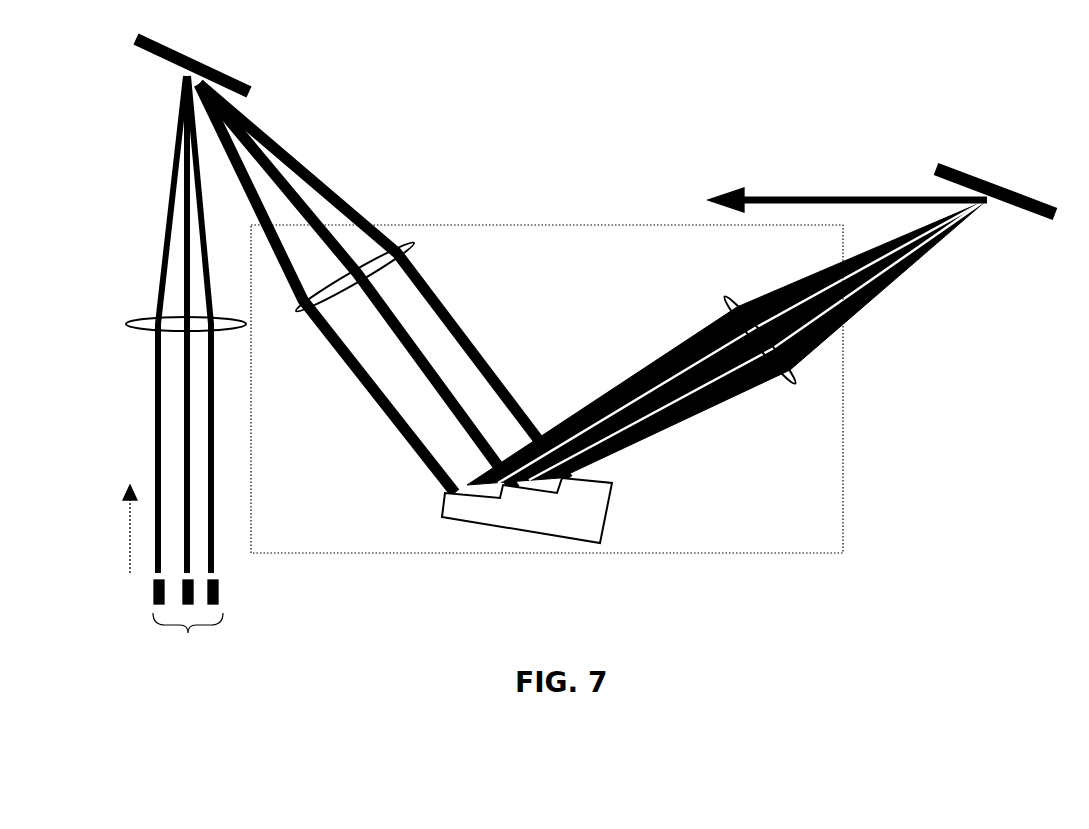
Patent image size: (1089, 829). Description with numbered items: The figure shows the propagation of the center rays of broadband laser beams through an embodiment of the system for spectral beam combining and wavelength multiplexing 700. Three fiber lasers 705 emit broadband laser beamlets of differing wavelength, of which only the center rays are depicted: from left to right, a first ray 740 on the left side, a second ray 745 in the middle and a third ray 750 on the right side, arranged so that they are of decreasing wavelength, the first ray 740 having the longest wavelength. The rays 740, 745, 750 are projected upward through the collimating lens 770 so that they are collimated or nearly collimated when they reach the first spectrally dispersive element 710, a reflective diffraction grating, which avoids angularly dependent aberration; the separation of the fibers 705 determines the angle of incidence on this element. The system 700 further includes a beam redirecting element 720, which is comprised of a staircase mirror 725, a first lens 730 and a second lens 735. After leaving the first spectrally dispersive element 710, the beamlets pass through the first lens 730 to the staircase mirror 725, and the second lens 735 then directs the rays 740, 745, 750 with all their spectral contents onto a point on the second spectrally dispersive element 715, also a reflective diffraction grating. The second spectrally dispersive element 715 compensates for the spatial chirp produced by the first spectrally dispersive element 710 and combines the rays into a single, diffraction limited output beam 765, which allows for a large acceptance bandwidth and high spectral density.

The system for spectral beam combining and wavelength multiplexing 700 is at (572, 52).
The fiber lasers 705 is at (188, 625).
The first spectrally dispersive element 710 is at (229, 56).
The second spectrally dispersive element 715 is at (1009, 175).
The beam redirecting element 720 is at (517, 220).
The staircase mirror 725 is at (613, 535).
The first lens 730 is at (420, 239).
The second lens 735 is at (805, 384).
The first ray 740 is at (151, 421).
The second ray 745 is at (182, 459).
The third ray 750 is at (218, 465).
The output beam 765 is at (825, 180).
The collimating lens 770 is at (123, 314).